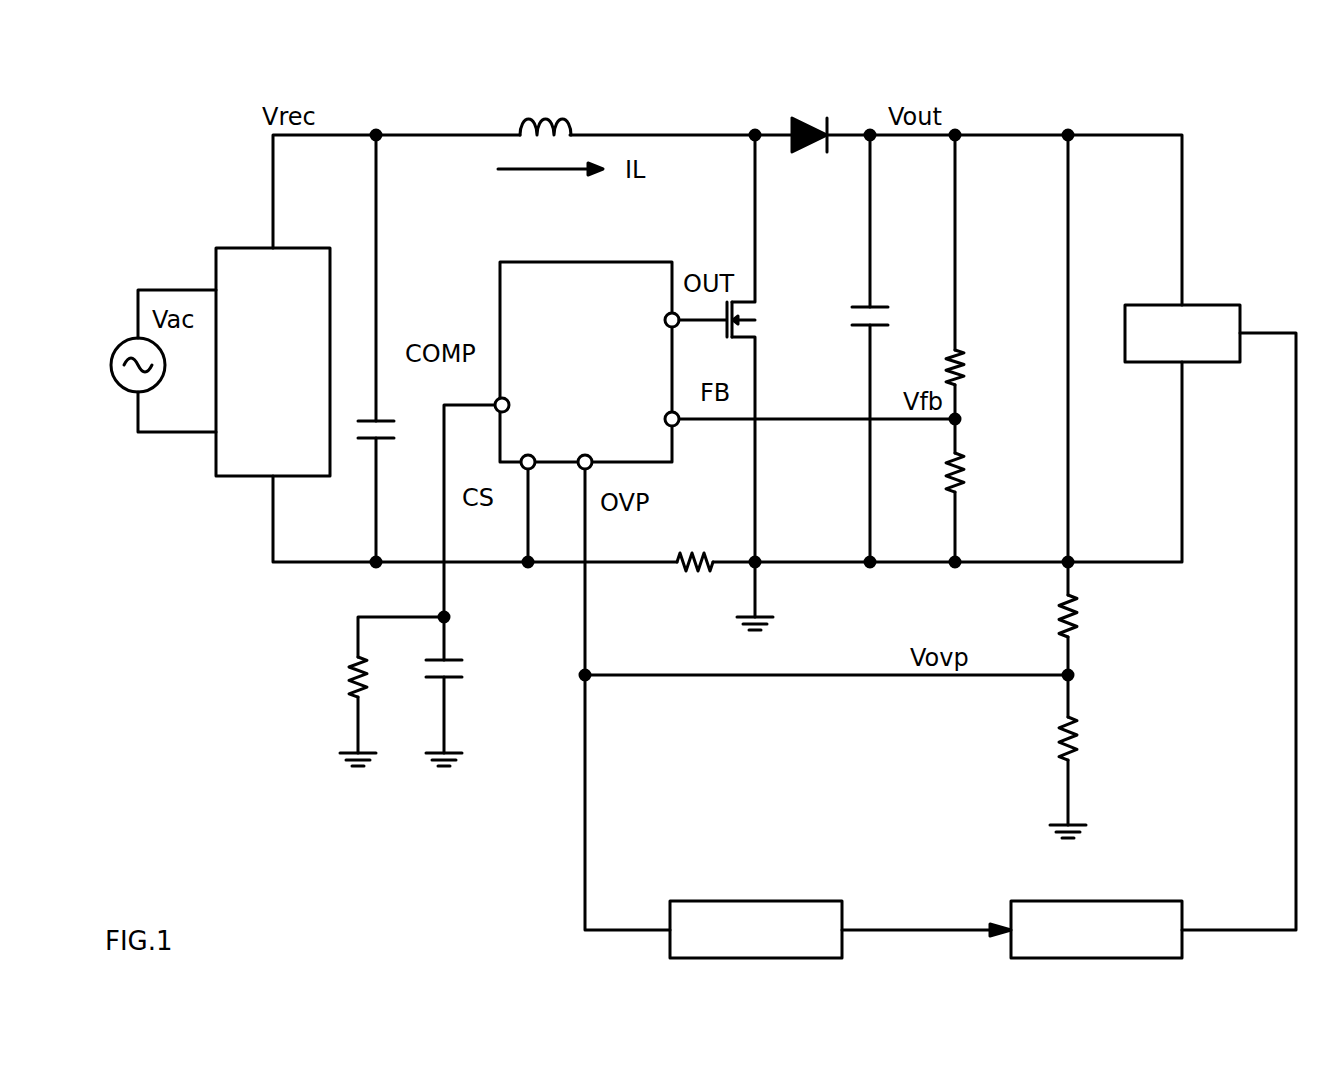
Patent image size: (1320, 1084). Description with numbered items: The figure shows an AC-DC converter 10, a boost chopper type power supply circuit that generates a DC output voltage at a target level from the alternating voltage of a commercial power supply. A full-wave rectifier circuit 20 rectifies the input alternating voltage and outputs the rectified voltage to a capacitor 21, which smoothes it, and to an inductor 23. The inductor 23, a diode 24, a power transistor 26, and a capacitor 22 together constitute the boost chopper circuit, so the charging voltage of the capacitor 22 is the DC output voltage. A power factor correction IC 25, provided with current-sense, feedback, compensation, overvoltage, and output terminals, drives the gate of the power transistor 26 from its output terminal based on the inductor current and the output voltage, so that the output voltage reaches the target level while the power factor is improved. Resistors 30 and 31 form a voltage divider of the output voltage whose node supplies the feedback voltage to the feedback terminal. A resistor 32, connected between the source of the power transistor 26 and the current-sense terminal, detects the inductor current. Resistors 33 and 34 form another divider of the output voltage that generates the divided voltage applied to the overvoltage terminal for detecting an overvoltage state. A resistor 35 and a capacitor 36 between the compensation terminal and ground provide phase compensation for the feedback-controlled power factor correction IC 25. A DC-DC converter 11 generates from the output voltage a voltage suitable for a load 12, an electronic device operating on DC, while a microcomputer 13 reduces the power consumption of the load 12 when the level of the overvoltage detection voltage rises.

The AC-DC converter 10 is at (1020, 100).
The DC-DC converter 11 is at (1208, 305).
The load 12 is at (1176, 901).
The microcomputer 13 is at (838, 901).
The full-wave rectifier circuit 20 is at (216, 248).
The capacitor 21 is at (362, 442).
The capacitor 22 is at (875, 307).
The inductor 23 is at (568, 120).
The diode 24 is at (812, 122).
The power factor correction IC 25 is at (515, 262).
The power transistor 26 is at (752, 338).
The resistor 30 is at (965, 360).
The resistor 31 is at (965, 465).
The resistor 32 is at (695, 575).
The resistor 33 is at (1078, 627).
The resistor 34 is at (1078, 747).
The resistor 35 is at (350, 690).
The capacitor 36 is at (455, 660).